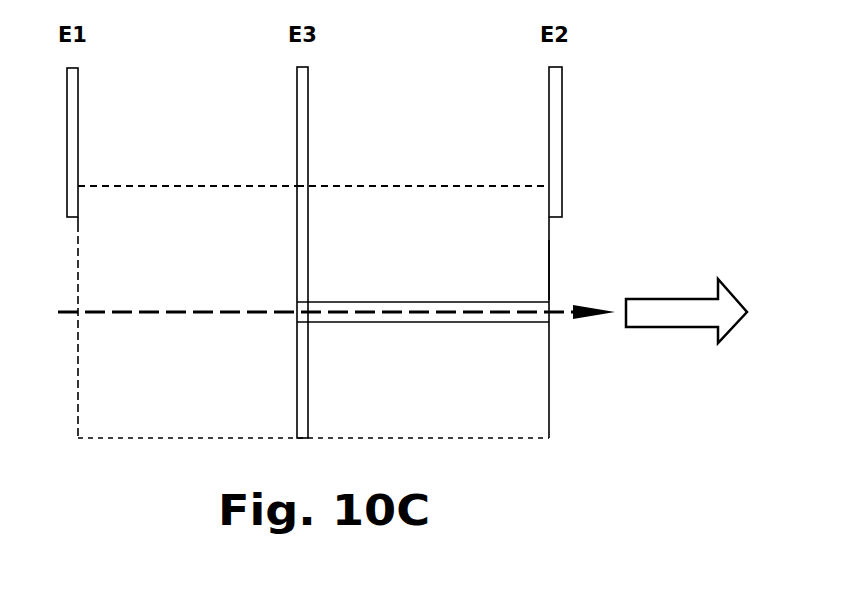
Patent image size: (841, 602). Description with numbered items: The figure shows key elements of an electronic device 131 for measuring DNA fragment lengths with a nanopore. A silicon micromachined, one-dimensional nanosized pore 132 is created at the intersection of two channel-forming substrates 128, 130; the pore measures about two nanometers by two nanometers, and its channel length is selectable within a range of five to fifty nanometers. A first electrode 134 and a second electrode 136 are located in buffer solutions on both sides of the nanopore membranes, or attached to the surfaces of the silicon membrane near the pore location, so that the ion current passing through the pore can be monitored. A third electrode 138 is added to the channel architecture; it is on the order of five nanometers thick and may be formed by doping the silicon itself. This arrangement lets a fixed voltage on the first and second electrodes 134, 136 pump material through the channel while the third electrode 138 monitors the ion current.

The electrode E1 134 is at (79, 128).
The third electrode E3 138 is at (319, 113).
The electrode E2 136 is at (563, 128).
The channel-forming substrate 128 is at (192, 188).
The channel-forming substrate 130 is at (434, 188).
The electronic device 131 is at (552, 262).
The pore 132 is at (308, 322).